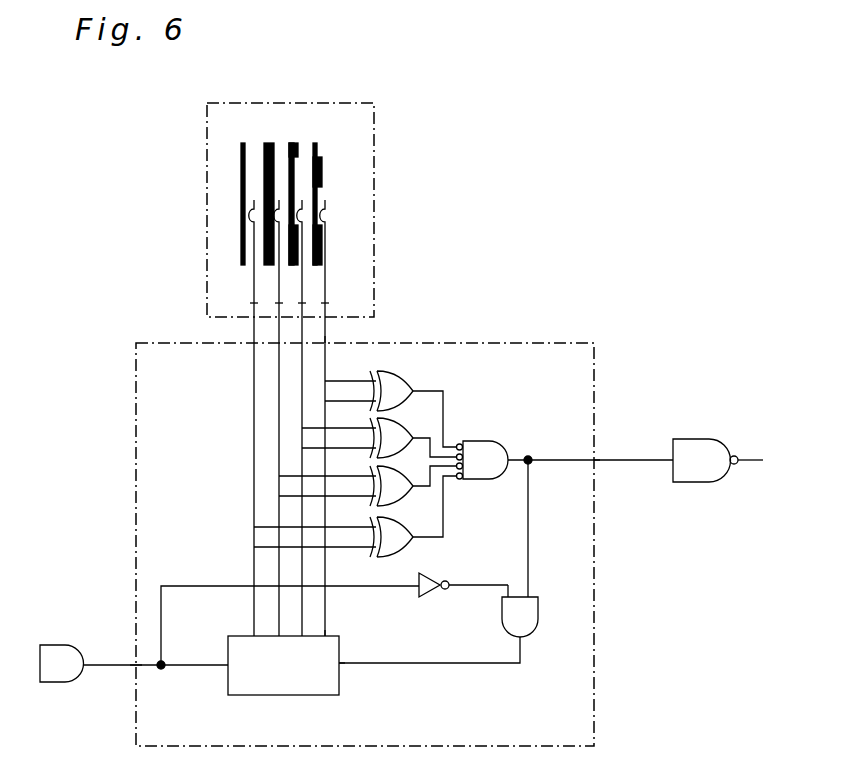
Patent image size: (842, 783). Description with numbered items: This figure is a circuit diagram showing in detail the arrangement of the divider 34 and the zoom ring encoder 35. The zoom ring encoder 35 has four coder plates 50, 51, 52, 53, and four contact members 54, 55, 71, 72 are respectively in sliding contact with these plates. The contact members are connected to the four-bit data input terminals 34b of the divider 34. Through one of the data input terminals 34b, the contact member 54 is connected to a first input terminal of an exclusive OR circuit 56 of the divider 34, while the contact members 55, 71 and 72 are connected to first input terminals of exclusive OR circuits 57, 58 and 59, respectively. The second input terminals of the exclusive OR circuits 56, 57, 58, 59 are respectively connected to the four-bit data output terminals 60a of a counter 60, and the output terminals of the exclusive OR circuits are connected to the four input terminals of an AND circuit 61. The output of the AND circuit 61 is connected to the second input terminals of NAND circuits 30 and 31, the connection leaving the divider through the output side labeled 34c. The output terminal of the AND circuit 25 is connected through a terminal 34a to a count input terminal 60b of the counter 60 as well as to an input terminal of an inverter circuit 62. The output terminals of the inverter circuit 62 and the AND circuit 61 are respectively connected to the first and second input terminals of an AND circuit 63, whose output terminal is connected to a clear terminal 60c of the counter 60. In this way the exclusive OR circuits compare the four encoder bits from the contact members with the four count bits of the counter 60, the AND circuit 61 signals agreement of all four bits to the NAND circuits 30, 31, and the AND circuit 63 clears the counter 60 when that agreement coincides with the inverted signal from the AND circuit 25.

The AND circuit 25 is at (58, 645).
The NAND circuit 30 is at (715, 422).
The NAND circuit 31 is at (697, 441).
The divider 34 is at (560, 342).
The terminal 34a is at (135, 666).
The four-bit data input terminals 34b is at (330, 340).
The output terminal 34c is at (628, 501).
The zoom ring encoder 35 is at (377, 143).
The coder plate 50 is at (243, 143).
The coder plate 51 is at (267, 143).
The coder plate 52 is at (290, 143).
The coder plate 53 is at (314, 143).
The contact member 54 is at (254, 279).
The contact member 55 is at (279, 297).
The exclusive OR circuit 56 is at (404, 545).
The exclusive OR circuit 57 is at (404, 494).
The exclusive OR circuit 58 is at (404, 433).
The exclusive OR circuit 59 is at (404, 386).
The counter 60 is at (300, 685).
The four-bit data output terminals 60a is at (330, 634).
The count input terminal 60b is at (228, 668).
The clear terminal 60c is at (340, 668).
The AND circuit 61 is at (497, 453).
The inverter circuit 62 is at (428, 592).
The AND circuit 63 is at (530, 618).
The contact member 71 is at (325, 268).
The contact member 72 is at (302, 285).